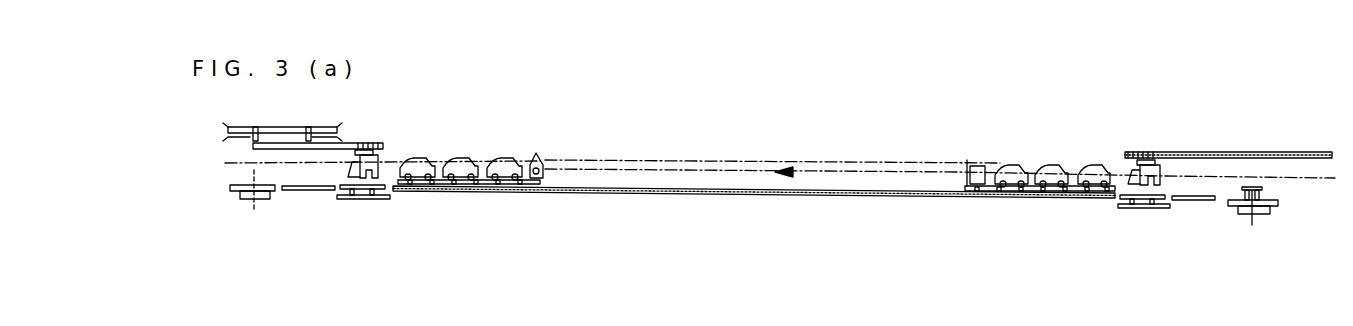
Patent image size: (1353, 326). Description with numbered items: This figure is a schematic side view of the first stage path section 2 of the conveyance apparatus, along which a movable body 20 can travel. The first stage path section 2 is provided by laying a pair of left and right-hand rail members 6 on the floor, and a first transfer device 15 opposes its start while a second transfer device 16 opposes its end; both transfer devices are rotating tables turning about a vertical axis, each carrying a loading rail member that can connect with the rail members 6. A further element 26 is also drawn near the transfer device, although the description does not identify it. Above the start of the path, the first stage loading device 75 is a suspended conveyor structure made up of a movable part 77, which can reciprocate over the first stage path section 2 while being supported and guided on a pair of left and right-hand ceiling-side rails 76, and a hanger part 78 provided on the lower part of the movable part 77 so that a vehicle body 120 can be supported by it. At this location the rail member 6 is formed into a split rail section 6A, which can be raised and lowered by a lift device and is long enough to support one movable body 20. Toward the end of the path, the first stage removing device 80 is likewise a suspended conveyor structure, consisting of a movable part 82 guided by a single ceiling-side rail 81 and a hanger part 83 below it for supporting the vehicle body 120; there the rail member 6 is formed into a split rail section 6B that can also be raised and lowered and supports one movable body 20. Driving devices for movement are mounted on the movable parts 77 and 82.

The first stage path section 2 is at (703, 170).
The rail member 6 is at (672, 193).
The split rail section 6A is at (1141, 210).
The split rail section 6B is at (367, 200).
The first transfer device 15 is at (1257, 183).
The second transfer device 16 is at (235, 203).
The movable body 20 is at (496, 192).
The hanger 26 is at (1243, 185).
The first stage loading device 75 is at (1195, 151).
The ceiling-side rail 76 is at (1307, 152).
The movable part 77 is at (1146, 150).
The hanger part 78 is at (1126, 160).
The first stage removing device 80 is at (317, 118).
The ceiling-side rail 81 is at (346, 140).
The movable part 82 is at (380, 140).
The hanger part 83 is at (384, 153).
The vehicle body 120 is at (1050, 165).